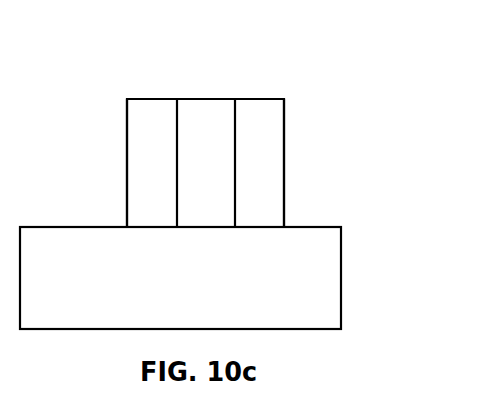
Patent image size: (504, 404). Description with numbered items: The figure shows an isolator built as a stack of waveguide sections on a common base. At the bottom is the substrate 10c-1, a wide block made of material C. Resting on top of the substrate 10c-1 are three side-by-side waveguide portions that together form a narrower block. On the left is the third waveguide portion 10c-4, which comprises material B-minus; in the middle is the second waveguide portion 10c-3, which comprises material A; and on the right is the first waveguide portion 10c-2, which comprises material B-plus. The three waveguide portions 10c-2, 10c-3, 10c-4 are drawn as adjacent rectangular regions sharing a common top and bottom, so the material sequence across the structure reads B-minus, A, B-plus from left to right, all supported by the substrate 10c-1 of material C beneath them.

The substrate 10c-1 is at (350, 293).
The first waveguide portion 10c-2 is at (297, 145).
The second waveguide portion 10c-3 is at (217, 97).
The third waveguide portion 10c-4 is at (125, 166).